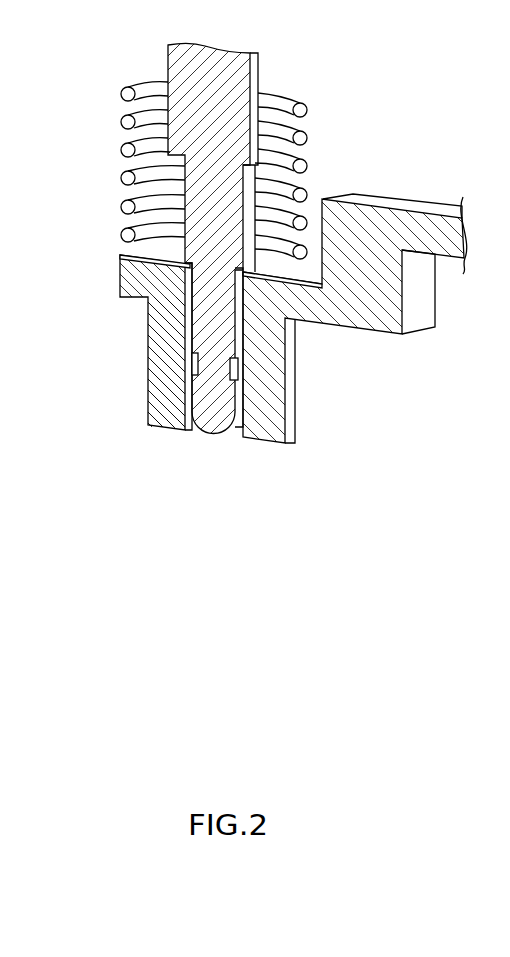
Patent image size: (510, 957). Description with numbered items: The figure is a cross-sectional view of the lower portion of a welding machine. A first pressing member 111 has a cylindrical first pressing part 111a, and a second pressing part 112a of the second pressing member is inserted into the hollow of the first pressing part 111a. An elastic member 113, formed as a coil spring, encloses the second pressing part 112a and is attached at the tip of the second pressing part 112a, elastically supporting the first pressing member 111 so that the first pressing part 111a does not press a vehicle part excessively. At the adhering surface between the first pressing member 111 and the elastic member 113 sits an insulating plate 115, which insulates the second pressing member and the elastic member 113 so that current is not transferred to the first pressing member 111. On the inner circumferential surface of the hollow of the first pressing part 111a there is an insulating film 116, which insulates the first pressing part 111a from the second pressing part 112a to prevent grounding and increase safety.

The first pressing member 111 is at (127, 272).
The first pressing part 111a is at (160, 385).
The second pressing part 112a is at (121, 181).
The elastic member 113 is at (121, 123).
The insulating plate 115 is at (155, 252).
The insulating film 116 is at (188, 365).